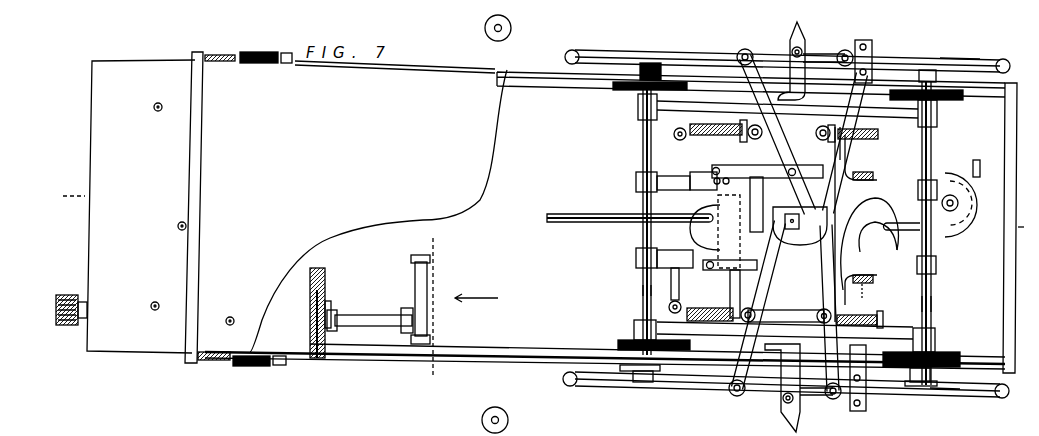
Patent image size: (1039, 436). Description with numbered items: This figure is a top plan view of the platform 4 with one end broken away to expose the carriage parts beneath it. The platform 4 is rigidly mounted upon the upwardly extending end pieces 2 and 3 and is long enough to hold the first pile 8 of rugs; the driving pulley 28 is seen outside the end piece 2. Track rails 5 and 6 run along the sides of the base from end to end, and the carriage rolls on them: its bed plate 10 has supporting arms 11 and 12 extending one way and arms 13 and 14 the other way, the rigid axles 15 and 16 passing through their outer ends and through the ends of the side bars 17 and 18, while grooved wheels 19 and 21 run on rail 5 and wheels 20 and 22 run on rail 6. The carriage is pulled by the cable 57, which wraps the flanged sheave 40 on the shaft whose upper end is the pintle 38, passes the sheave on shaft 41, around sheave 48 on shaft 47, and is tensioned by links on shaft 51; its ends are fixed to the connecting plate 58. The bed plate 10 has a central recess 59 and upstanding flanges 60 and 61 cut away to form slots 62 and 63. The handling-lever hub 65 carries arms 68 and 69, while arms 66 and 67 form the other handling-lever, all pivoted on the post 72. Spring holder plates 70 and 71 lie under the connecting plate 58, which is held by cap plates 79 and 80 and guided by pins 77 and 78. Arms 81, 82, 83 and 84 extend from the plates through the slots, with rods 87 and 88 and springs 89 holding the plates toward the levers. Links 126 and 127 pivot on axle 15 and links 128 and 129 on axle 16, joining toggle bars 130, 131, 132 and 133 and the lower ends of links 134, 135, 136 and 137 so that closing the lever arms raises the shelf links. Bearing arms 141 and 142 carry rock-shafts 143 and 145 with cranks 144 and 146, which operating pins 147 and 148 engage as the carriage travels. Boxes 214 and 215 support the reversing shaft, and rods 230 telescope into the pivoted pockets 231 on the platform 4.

The end piece 2 is at (95, 127).
The end piece 3 is at (1019, 147).
The platform 4 is at (378, 206).
The track rail 5 is at (543, 82).
The track rail 6 is at (518, 350).
The first pile 8 is at (539, 247).
The bed plate 10 is at (433, 312).
The supporting arm 11 is at (636, 182).
The supporting arm 12 is at (636, 258).
The supporting arm 13 is at (766, 77).
The supporting arm 14 is at (287, 52).
The rigid axle 15 is at (642, 290).
The rigid axle 16 is at (932, 303).
The side bar 17 is at (640, 115).
The side bar 18 is at (634, 330).
The grooved wheel 19 is at (627, 91).
The grooved wheel 20 is at (620, 345).
The grooved wheel 21 is at (947, 101).
The grooved wheel 22 is at (943, 353).
The driving pulley 28 is at (56, 308).
The pintle 38 is at (151, 306).
The flanged sheave 40 is at (162, 107).
The shaft 41 is at (178, 226).
The shaft 47 is at (960, 203).
The sheave 48 is at (957, 204).
The shaft 51 is at (226, 321).
The cable 57 is at (557, 226).
The connecting plate 58 is at (698, 237).
The recess 59 is at (718, 127).
The flange 60 is at (862, 142).
The flange 61 is at (861, 294).
The slot 62 is at (795, 166).
The slot 63 is at (786, 307).
The handling-lever hub 65 is at (800, 228).
The handling-lever arm 66 is at (737, 398).
The handling-lever arm 67 is at (850, 48).
The handling-lever arm 68 is at (836, 401).
The handling-lever arm 69 is at (746, 48).
The sliding spring holder plate 70 is at (700, 172).
The spring-holder plate 71 is at (876, 224).
The post 72 is at (800, 221).
The pin 77 is at (729, 231).
The pin 78 is at (855, 279).
The cap plate 79 is at (745, 165).
The cap plate 80 is at (713, 271).
The arm 81 is at (740, 291).
The arm 82 is at (778, 165).
The arm 83 is at (850, 144).
The arm 84 is at (854, 310).
The rod 87 is at (885, 128).
The rod 88 is at (873, 312).
The spring 89 is at (875, 150).
The link 126 is at (653, 64).
The link 127 is at (645, 383).
The link 128 is at (927, 70).
The link 129 is at (920, 385).
The toggle bar 130 is at (622, 50).
The toggle bar 131 is at (617, 391).
The toggle bar 132 is at (950, 59).
The toggle bar 133 is at (942, 396).
The link 134 is at (590, 50).
The link 135 is at (582, 393).
The link 136 is at (988, 60).
The link 137 is at (987, 396).
The bearing arm 141 is at (805, 62).
The bearing arm 142 is at (793, 381).
The rock-shaft 143 is at (803, 50).
The crank 144 is at (801, 30).
The rock-shaft 145 is at (794, 398).
The crank 146 is at (800, 420).
The operating pin 147 is at (485, 28).
The operating pin 148 is at (507, 420).
The box 214 is at (336, 312).
The box 215 is at (404, 312).
The rod 230 is at (220, 55).
The cylindrical pivoted pocket 231 is at (255, 210).